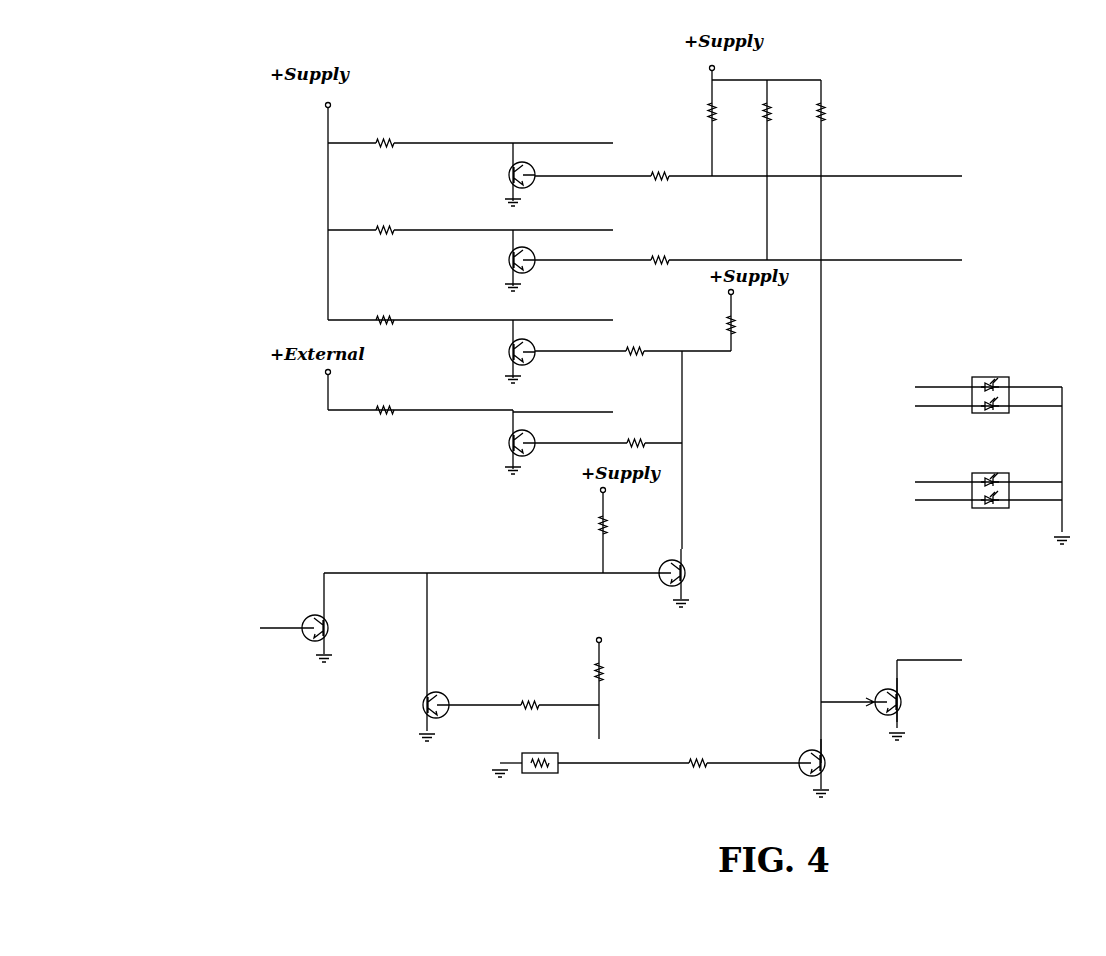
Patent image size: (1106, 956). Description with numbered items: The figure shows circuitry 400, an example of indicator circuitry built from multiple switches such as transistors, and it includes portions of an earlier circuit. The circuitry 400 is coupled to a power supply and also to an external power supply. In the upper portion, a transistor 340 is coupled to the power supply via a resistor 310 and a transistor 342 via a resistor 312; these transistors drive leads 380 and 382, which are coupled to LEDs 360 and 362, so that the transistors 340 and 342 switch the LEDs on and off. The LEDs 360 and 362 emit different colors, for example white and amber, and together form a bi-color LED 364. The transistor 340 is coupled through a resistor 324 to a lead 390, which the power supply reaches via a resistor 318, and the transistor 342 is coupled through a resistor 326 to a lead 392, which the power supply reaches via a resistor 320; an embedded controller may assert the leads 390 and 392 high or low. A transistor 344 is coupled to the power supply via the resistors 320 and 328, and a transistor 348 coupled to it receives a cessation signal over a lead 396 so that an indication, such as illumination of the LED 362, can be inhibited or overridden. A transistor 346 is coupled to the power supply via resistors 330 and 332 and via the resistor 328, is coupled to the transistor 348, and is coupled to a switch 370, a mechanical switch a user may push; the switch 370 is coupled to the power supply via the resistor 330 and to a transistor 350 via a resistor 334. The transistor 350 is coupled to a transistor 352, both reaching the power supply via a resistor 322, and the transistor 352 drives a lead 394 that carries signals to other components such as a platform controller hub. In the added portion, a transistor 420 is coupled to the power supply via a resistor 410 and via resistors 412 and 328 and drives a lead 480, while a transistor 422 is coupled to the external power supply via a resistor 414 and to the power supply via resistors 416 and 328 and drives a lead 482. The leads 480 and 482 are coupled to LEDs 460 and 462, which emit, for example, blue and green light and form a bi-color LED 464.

The circuitry 400 is at (219, 91).
The resistor 310 is at (384, 141).
The resistor 312 is at (383, 233).
The resistor 318 is at (708, 113).
The resistor 320 is at (765, 111).
The resistor 322 is at (824, 113).
The resistor 324 is at (659, 178).
The resistor 326 is at (660, 257).
The resistor 328 is at (735, 325).
The resistor 330 is at (600, 675).
The resistor 332 is at (532, 702).
The resistor 334 is at (700, 766).
The transistor 340 is at (509, 176).
The transistor 342 is at (525, 264).
The transistor 344 is at (690, 573).
The transistor 346 is at (423, 704).
The transistor 348 is at (328, 630).
The transistor 350 is at (826, 763).
The transistor 352 is at (900, 700).
The LED 360 is at (990, 378).
The LED 362 is at (990, 413).
The bi-color LED 364 is at (1005, 378).
The switch 370 is at (537, 775).
The lead 380 is at (578, 142).
The lead 382 is at (593, 230).
The lead 390 is at (920, 176).
The lead 392 is at (916, 262).
The lead 394 is at (930, 659).
The lead 396 is at (290, 626).
The resistor 410 is at (385, 324).
The resistor 412 is at (636, 350).
The resistor 414 is at (385, 414).
The resistor 416 is at (637, 441).
The transistor 420 is at (508, 351).
The transistor 422 is at (508, 442).
The LED 460 is at (992, 511).
The LED 462 is at (990, 474).
The bi-color LED 464 is at (1000, 510).
The lead 480 is at (593, 320).
The lead 482 is at (581, 412).